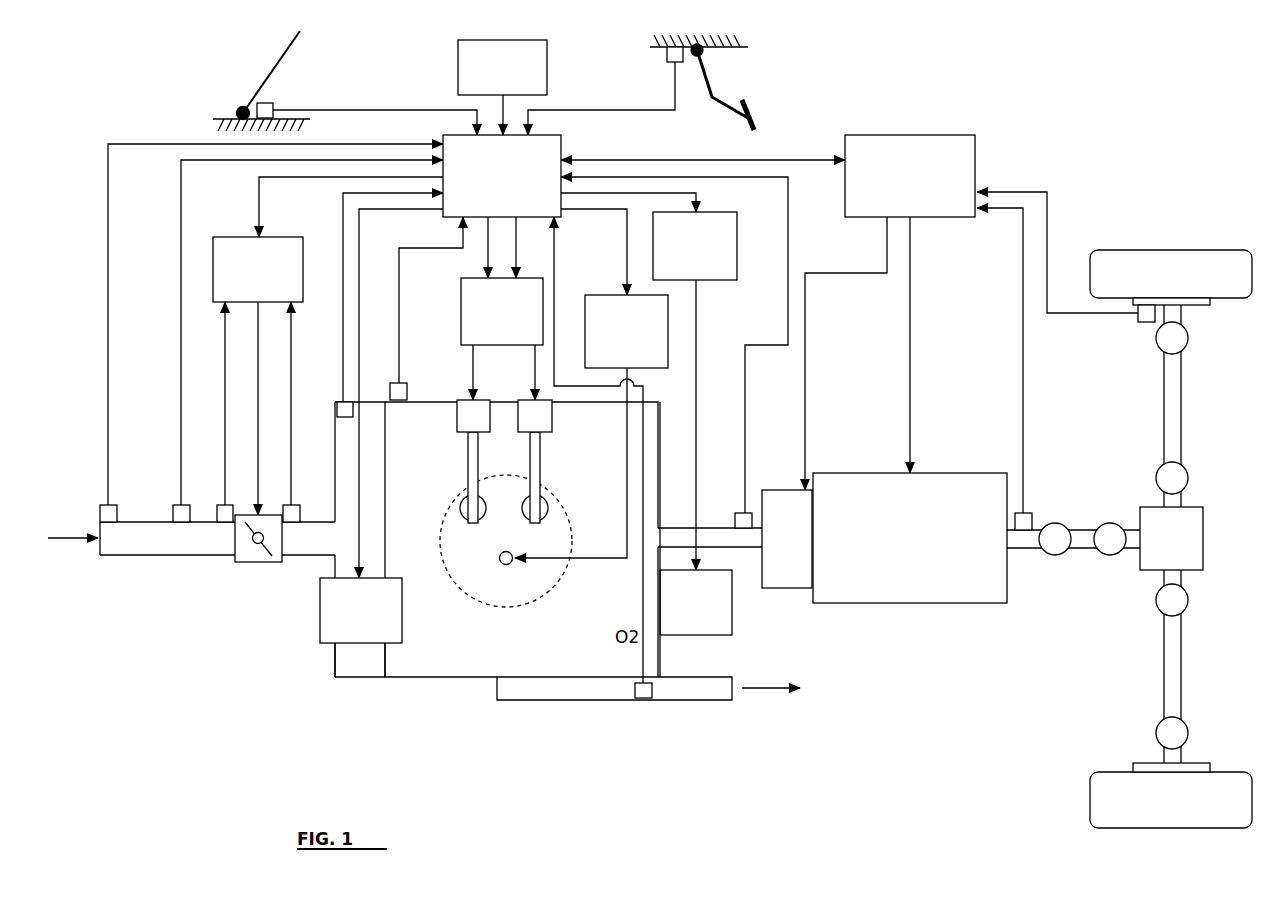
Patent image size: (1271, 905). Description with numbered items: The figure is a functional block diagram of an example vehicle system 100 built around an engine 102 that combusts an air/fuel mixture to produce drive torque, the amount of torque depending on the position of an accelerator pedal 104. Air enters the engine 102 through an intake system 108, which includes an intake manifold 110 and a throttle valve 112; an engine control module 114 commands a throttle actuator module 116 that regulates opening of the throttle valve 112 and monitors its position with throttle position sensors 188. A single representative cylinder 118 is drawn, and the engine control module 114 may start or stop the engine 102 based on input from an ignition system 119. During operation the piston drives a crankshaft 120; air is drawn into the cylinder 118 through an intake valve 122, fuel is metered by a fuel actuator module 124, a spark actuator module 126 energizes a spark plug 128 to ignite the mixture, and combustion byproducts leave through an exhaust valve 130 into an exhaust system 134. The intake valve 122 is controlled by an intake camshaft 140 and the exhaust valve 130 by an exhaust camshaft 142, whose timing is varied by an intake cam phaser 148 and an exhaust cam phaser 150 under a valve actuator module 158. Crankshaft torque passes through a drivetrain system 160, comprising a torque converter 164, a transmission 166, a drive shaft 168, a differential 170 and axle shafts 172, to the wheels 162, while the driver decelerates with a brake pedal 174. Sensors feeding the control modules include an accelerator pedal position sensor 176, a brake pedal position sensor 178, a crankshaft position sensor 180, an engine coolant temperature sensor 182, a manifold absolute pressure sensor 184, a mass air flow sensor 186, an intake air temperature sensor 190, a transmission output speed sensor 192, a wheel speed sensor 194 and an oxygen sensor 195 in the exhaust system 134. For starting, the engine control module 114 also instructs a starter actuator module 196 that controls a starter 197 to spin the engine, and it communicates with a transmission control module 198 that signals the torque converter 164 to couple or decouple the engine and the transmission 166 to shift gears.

The vehicle system 100 is at (124, 80).
The engine 102 is at (462, 677).
The accelerator pedal 104 is at (259, 95).
The intake system 108 is at (222, 637).
The intake manifold 110 is at (335, 660).
The throttle valve 112 is at (262, 563).
The engine control module 114 is at (562, 148).
The throttle actuator module 116 is at (240, 237).
The cylinder 118 is at (558, 590).
The ignition system 119 is at (458, 66).
The crankshaft 120 is at (744, 548).
The intake valve 122 is at (460, 512).
The fuel actuator module 124 is at (402, 616).
The spark actuator module 126 is at (608, 295).
The spark plug 128 is at (500, 562).
The exhaust valve 130 is at (548, 512).
The exhaust system 134 is at (678, 733).
The intake camshaft 140 is at (468, 462).
The exhaust camshaft 142 is at (540, 462).
The intake cam phaser 148 is at (457, 420).
The exhaust cam phaser 150 is at (552, 420).
The valve actuator module 158 is at (461, 305).
The drivetrain system 160 is at (885, 627).
The wheels 162 is at (1211, 300).
The torque converter 164 is at (788, 588).
The transmission 166 is at (950, 473).
The drive shaft 168 is at (1082, 548).
The differential 170 is at (1204, 540).
The axle shafts 172 is at (1182, 410).
The brake pedal 174 is at (758, 126).
The accelerator pedal position sensor 176 is at (274, 104).
The brake pedal position sensor 178 is at (667, 53).
The crankshaft position sensor 180 is at (750, 513).
The engine coolant temperature sensor 182 is at (405, 385).
The manifold absolute pressure sensor 184 is at (340, 402).
The mass air flow sensor 186 is at (178, 505).
The throttle position sensors 188 is at (223, 524).
The intake air temperature sensor 190 is at (100, 506).
The transmission output speed sensor 192 is at (1032, 513).
The wheel speed sensor 194 is at (1147, 322).
The oxygen sensor 195 is at (635, 690).
The starter actuator module 196 is at (718, 212).
The starter 197 is at (697, 635).
The transmission control module 198 is at (977, 142).